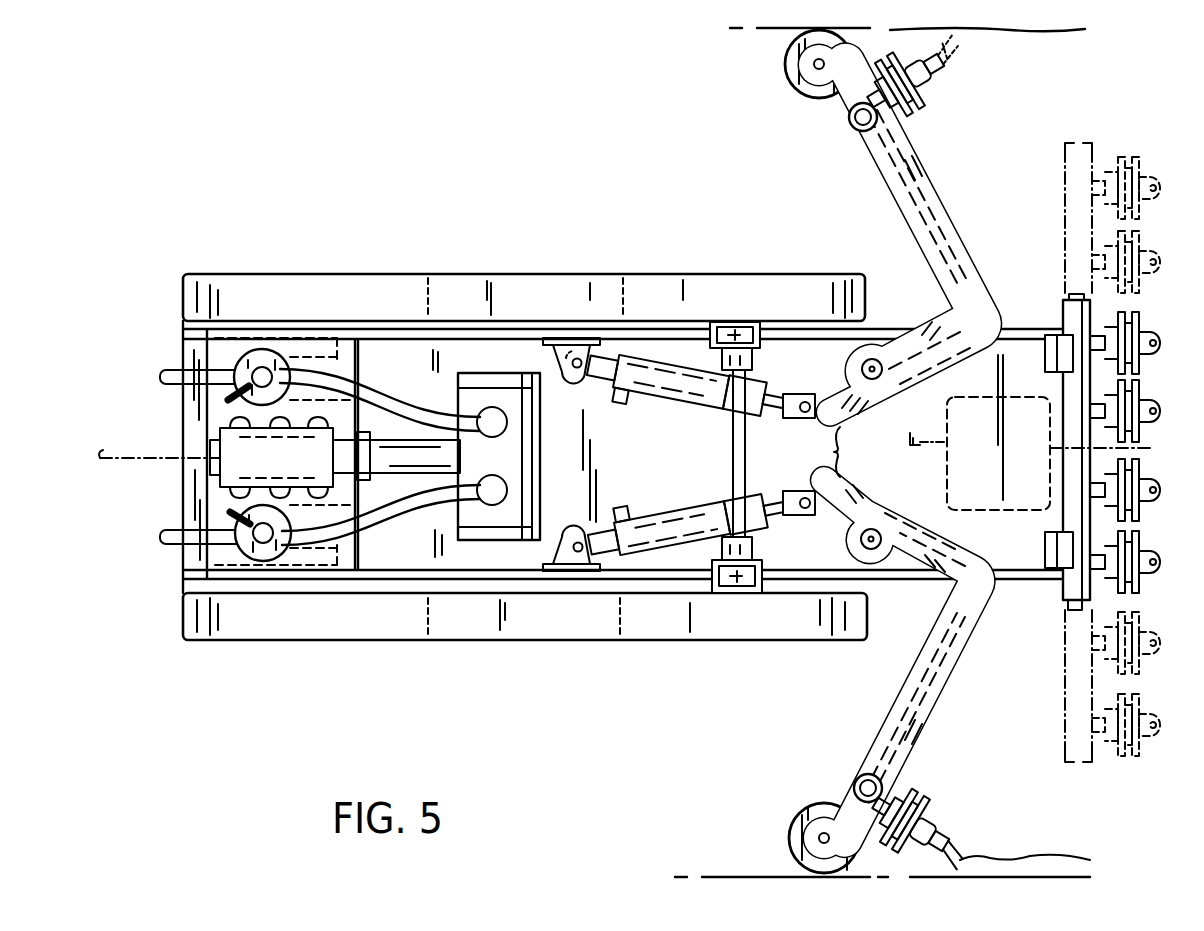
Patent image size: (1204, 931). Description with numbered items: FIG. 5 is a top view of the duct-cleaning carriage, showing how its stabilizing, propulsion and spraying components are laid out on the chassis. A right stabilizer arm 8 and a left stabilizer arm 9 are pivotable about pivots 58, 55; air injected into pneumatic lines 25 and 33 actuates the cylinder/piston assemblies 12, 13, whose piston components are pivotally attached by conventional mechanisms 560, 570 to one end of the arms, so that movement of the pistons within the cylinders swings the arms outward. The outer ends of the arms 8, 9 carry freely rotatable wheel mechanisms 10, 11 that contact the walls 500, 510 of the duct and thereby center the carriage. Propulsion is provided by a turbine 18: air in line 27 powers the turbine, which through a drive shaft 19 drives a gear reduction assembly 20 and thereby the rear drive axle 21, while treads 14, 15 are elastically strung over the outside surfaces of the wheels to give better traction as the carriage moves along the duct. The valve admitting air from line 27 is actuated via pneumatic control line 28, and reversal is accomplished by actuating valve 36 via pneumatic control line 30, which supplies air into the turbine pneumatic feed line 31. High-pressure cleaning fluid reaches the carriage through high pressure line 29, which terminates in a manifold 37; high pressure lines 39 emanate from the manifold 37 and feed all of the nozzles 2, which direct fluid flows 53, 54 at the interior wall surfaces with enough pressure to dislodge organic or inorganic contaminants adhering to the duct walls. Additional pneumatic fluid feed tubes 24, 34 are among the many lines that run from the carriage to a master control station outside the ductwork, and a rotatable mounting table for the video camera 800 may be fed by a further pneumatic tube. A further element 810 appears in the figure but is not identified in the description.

The nozzles 2 is at (936, 76).
The right stabilizer arm 8 is at (958, 676).
The left stabilizer arm 9 is at (913, 160).
The wheel mechanism 10 is at (803, 808).
The wheel mechanism 11 is at (798, 96).
The cylinder/piston assembly 12 is at (688, 397).
The cylinder/piston assembly 13 is at (674, 518).
The tread 14 is at (687, 287).
The tread 15 is at (503, 632).
The turbine 18 is at (500, 372).
The drive shaft 19 is at (385, 473).
The gear reduction assembly 20 is at (382, 525).
The rear drive axle 21 is at (347, 361).
The pneumatic fluid feed tube 24 is at (733, 423).
The pneumatic line 25 is at (628, 407).
The line 27 is at (173, 367).
The pneumatic control line 28 is at (235, 395).
The high pressure line 29 is at (143, 450).
The pneumatic control line 30 is at (232, 514).
The turbine pneumatic feed line 31 is at (175, 545).
The pneumatic line 33 is at (620, 500).
The pneumatic fluid feed tube 34 is at (742, 490).
The valve 36 is at (262, 560).
The manifold 37 is at (217, 480).
The high pressure lines 39 is at (856, 452).
The fluid flow 53 is at (955, 45).
The fluid flow 54 is at (960, 853).
The pivot 55 is at (887, 350).
The pivot 58 is at (877, 578).
The duct wall 500 is at (723, 876).
The duct wall 510 is at (770, 31).
The pivotal attachment mechanism 560 is at (796, 492).
The pivotal attachment mechanism 570 is at (820, 384).
The rotatable mounting table for the video camera 800 is at (1122, 452).
The bracket 810 is at (971, 453).